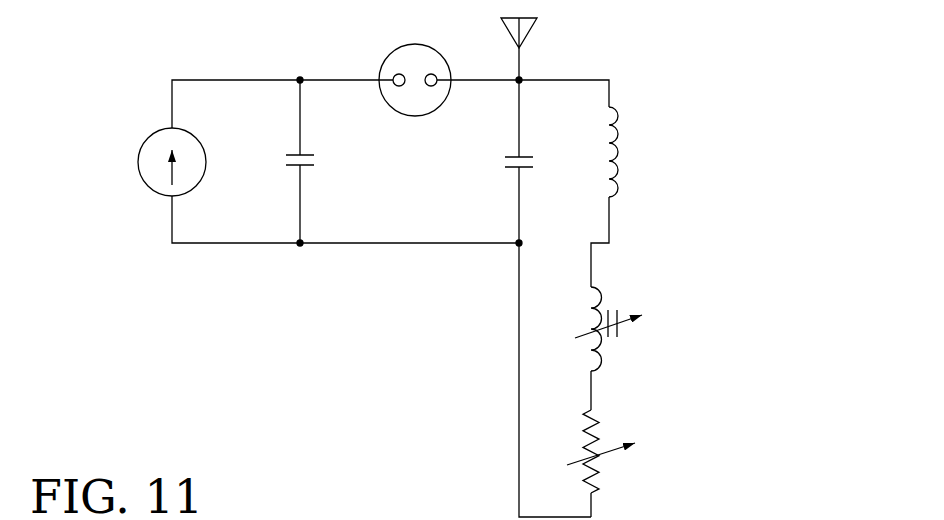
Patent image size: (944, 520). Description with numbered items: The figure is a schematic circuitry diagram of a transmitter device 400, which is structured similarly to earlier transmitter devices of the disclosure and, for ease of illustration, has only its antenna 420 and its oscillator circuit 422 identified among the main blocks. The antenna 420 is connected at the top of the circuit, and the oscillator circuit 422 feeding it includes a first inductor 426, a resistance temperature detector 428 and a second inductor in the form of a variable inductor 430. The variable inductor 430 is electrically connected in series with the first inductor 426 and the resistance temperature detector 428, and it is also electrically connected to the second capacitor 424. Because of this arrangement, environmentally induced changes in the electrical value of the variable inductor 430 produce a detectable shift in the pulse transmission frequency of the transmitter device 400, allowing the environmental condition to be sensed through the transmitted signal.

The transmitter device 400 is at (118, 95).
The antenna 420 is at (533, 35).
The oscillator circuit 422 is at (660, 453).
The second capacitor 424 is at (510, 172).
The first inductor 426 is at (620, 150).
The resistance temperature detector 428 is at (600, 413).
The variable inductor 430 is at (602, 292).